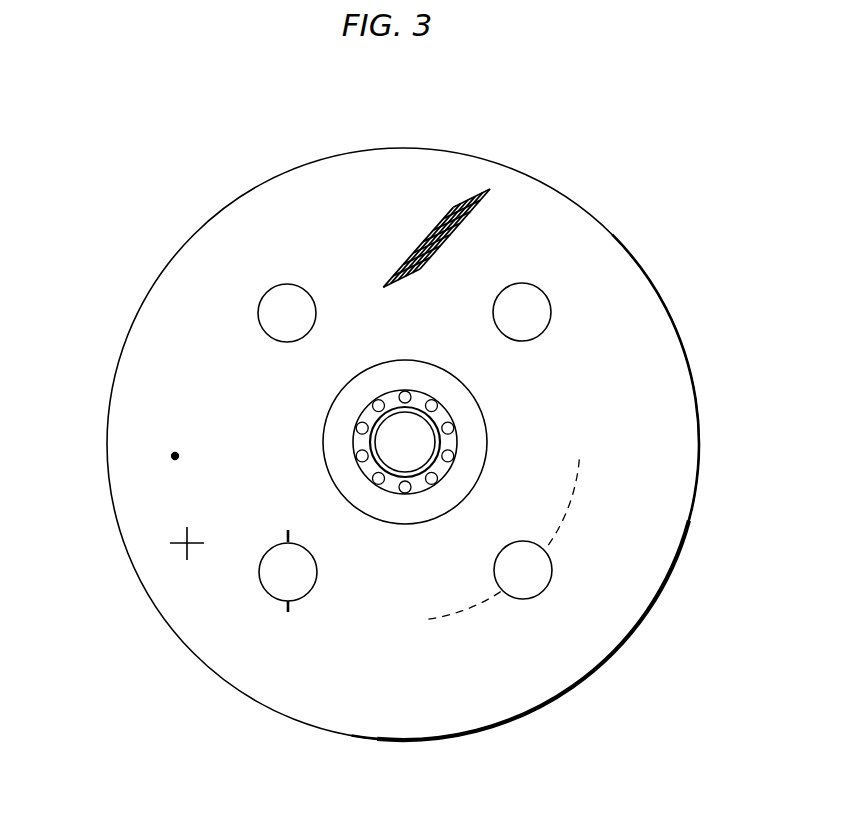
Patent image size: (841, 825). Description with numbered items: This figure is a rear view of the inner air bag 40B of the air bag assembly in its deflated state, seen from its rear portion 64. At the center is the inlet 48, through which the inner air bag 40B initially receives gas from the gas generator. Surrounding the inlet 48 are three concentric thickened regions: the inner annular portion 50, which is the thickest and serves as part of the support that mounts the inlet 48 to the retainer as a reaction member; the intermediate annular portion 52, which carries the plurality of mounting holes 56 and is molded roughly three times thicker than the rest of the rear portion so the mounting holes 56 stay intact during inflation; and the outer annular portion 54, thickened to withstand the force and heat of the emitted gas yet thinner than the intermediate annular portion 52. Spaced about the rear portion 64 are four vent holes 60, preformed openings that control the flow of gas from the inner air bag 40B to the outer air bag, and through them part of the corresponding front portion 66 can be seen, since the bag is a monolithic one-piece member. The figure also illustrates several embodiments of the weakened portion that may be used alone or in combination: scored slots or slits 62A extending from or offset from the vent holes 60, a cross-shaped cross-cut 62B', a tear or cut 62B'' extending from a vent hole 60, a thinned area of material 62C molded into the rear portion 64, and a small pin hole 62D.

The inner air bag 40B is at (563, 162).
The inlet 48 is at (418, 433).
The inner annular portion 50 is at (375, 442).
The intermediate annular portion 52 is at (368, 415).
The outer annular portion 54 is at (343, 405).
The mounting holes 56 is at (432, 399).
The vent holes 60 is at (530, 297).
The slots or slits 62A is at (570, 512).
The cross-cut 62B' is at (131, 565).
The tear or cut 62B'' is at (228, 630).
The thinned area of material 62C is at (467, 202).
The pin hole 62D is at (172, 456).
The rear portion 64 is at (637, 322).
The front portion 66 is at (523, 582).